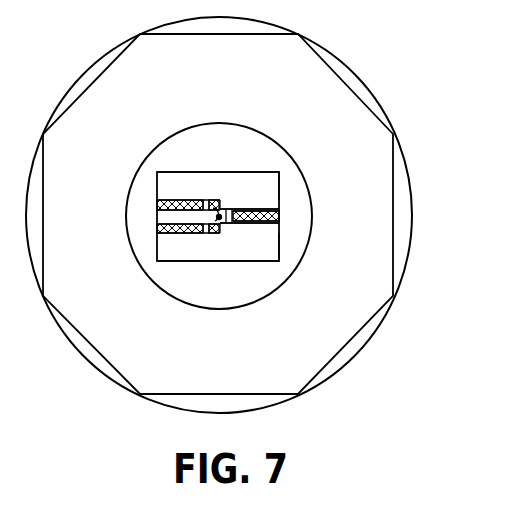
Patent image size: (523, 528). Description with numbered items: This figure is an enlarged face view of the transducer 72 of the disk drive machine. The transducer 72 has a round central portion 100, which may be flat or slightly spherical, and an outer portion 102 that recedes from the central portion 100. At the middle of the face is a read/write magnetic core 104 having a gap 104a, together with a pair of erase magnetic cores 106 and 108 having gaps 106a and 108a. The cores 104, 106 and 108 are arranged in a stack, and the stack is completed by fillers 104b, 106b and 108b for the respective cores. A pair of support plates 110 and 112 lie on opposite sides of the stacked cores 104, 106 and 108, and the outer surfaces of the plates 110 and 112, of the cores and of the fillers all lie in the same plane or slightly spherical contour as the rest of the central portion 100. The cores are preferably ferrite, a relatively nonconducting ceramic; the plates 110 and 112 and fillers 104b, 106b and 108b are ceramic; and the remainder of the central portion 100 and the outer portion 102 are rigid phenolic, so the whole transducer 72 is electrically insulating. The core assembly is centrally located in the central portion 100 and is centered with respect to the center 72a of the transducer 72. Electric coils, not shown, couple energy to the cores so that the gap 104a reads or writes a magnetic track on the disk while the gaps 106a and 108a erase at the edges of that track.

The transducer 72 is at (405, 151).
The center of the transducer 72a is at (211, 205).
The round central portion 100 is at (282, 148).
The outer portion 102 is at (300, 351).
The read/write magnetic core 104 is at (280, 217).
The gap 104a is at (232, 226).
The filler 104b is at (157, 216).
The erase magnetic core 106 is at (156, 202).
The gap 106a is at (207, 198).
The filler 106b is at (281, 204).
The erase magnetic core 108 is at (157, 232).
The gap 108a is at (205, 233).
The filler 108b is at (295, 244).
The support plate 110 is at (157, 188).
The support plate 112 is at (157, 247).